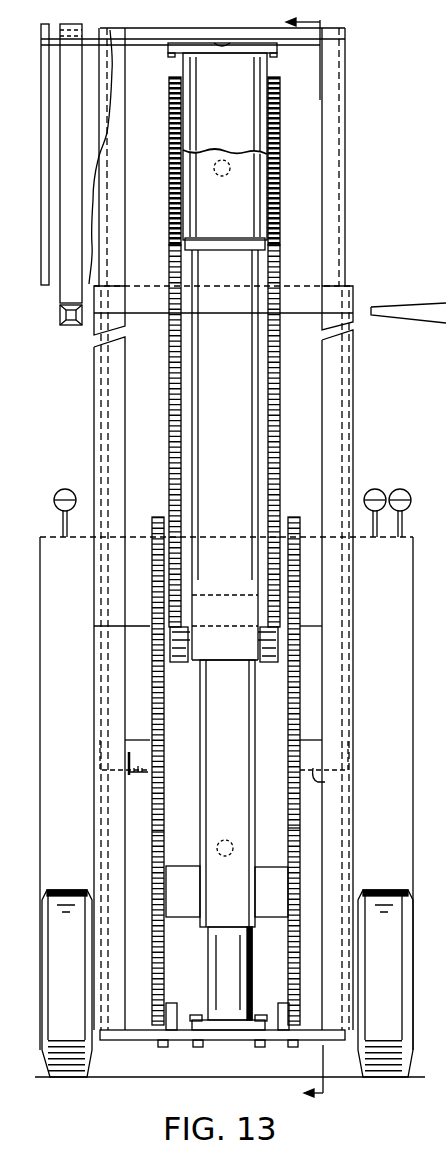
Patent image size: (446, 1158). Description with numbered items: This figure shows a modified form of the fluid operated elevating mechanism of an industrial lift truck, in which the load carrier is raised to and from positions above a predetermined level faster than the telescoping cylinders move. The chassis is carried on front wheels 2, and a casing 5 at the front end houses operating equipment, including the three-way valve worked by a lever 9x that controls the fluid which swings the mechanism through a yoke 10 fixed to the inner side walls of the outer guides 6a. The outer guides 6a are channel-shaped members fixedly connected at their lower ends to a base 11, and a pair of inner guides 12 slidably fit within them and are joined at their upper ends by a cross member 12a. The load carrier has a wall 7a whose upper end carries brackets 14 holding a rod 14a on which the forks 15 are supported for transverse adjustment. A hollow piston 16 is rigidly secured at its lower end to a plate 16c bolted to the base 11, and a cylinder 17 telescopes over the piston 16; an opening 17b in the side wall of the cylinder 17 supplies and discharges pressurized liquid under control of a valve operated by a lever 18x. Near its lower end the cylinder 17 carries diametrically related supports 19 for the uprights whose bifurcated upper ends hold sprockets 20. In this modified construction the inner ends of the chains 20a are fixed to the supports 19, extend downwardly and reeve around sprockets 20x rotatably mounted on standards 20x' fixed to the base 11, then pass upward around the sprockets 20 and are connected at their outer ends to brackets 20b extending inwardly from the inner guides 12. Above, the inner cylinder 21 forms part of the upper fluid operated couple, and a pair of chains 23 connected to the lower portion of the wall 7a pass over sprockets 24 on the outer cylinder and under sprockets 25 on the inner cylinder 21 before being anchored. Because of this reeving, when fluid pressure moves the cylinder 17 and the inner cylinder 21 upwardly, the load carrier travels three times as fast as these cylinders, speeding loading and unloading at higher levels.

The front wheels 2 is at (52, 983).
The casing 5 is at (409, 708).
The outer guides 6a is at (96, 396).
The wall 7a is at (50, 285).
The lever 9x is at (401, 489).
The yoke 10 is at (313, 615).
The base 11 is at (217, 1040).
The inner guides 12 is at (108, 194).
The cross member 12a is at (312, 36).
The brackets 14 is at (41, 36).
The rod 14a is at (110, 38).
The forks 15 is at (70, 326).
The piston 16 is at (230, 973).
The plate 16c is at (193, 1032).
The cylinder 17 is at (227, 793).
The opening 17b is at (225, 864).
The lever 18x is at (374, 489).
The supports 19 is at (185, 863).
The sprocket 20 is at (150, 520).
The chain 20a is at (160, 832).
The bracket 20b is at (150, 775).
The sprockets 20x is at (227, 999).
The standards 20x' is at (206, 1052).
The inner cylinder 21 is at (222, 351).
The chains 23 is at (170, 412).
The sprockets 24 is at (169, 101).
The sprockets 25 is at (180, 663).